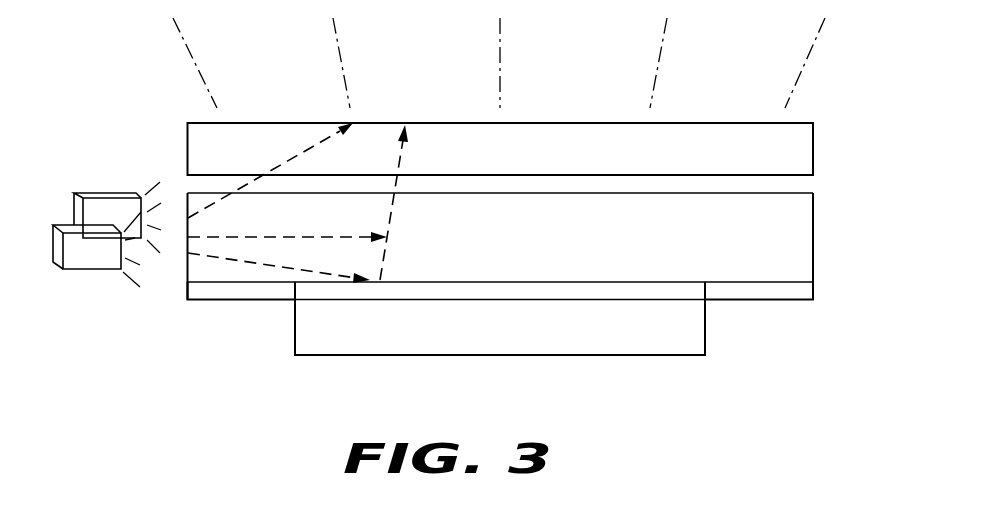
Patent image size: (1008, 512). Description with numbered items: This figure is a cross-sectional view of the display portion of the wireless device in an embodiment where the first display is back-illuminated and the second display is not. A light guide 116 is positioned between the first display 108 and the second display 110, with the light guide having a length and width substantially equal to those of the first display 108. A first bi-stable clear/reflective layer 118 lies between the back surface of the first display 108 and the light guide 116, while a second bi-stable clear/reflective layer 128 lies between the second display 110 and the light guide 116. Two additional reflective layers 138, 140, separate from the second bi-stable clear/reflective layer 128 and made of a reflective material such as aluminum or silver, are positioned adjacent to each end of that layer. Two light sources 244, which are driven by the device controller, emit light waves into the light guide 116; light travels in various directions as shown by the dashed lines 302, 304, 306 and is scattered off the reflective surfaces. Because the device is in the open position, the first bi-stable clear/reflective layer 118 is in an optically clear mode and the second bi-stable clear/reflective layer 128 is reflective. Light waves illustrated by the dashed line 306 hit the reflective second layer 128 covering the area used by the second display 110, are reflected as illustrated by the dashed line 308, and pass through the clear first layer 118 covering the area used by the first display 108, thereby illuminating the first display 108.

The first display 108 is at (793, 152).
The first bi-stable clear/reflective layer 118 is at (793, 183).
The light guide 116 is at (793, 235).
The additional reflective layer 140 is at (793, 290).
The second display 110 is at (690, 328).
The second bi-stable clear/reflective layer 128 is at (328, 292).
The additional reflective layer 138 is at (198, 290).
The light source 244 is at (105, 192).
The dashed line 302 is at (286, 157).
The dashed line 304 is at (213, 237).
The dashed line 306 is at (237, 260).
The dashed line 308 is at (406, 152).